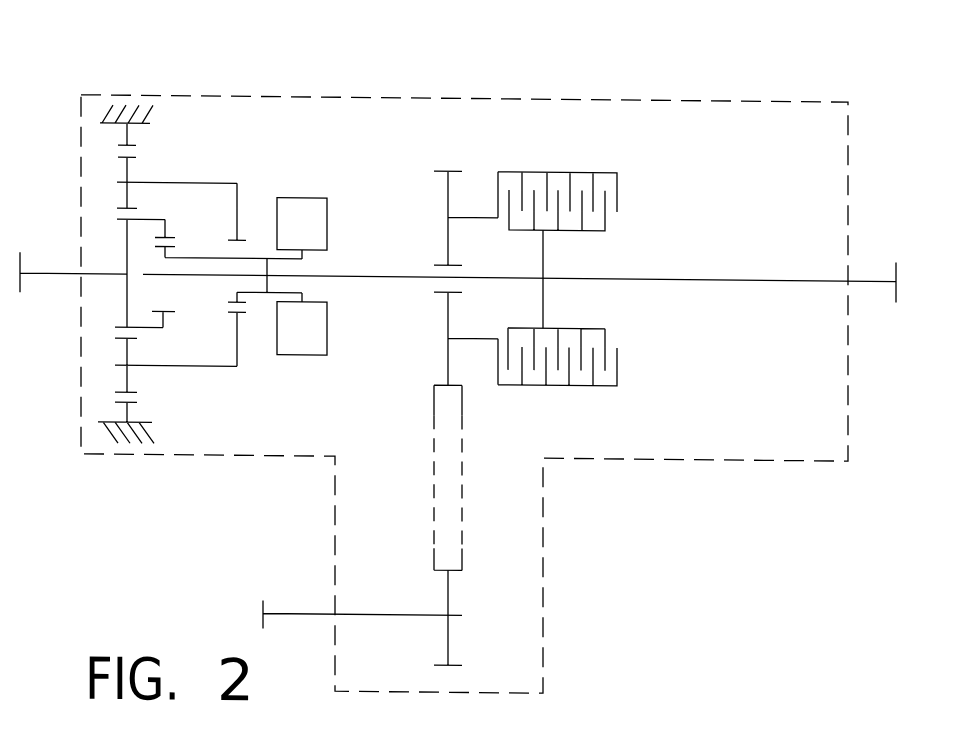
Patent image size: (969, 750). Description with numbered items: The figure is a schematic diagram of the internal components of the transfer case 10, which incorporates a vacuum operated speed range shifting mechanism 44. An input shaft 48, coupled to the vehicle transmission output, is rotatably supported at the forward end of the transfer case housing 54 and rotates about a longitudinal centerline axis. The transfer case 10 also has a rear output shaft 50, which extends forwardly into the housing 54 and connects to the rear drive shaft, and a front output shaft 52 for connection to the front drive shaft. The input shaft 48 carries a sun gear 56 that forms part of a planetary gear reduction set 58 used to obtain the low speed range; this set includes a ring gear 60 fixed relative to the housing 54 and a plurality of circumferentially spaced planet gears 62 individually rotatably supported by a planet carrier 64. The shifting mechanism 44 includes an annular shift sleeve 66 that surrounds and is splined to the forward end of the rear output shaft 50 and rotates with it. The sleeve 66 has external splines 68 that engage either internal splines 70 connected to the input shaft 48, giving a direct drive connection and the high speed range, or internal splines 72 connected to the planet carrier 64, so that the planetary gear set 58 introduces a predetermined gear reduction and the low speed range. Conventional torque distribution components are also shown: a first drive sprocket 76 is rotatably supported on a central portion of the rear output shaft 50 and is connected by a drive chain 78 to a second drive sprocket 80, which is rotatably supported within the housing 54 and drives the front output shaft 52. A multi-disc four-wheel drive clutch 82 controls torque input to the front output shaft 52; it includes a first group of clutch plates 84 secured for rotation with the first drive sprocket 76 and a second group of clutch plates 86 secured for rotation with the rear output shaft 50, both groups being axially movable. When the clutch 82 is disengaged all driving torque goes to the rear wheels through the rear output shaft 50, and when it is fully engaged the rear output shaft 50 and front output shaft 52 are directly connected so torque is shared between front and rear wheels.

The transfer case 10 is at (677, 67).
The vacuum operated speed range shifting mechanism 44 is at (321, 253).
The input shaft 48 is at (28, 276).
The rear output shaft 50 is at (856, 272).
The front output shaft 52 is at (300, 612).
The transfer case housing 54 is at (510, 93).
The sun gear 56 is at (125, 218).
The planetary gear reduction set 58 is at (94, 176).
The ring gear 60 is at (125, 136).
The planet gears 62 is at (125, 167).
The planet carrier 64 is at (177, 365).
The shift sleeve 66 is at (255, 255).
The external splines 68 is at (170, 248).
The internal splines 70 is at (170, 305).
The internal splines 72 is at (226, 310).
The first drive sprocket 76 is at (446, 193).
The drive chain 78 is at (433, 428).
The second drive sprocket 80 is at (447, 643).
The multi-disc four-wheel drive clutch 82 is at (588, 291).
The first group of clutch plates 84 is at (568, 176).
The second group of clutch plates 86 is at (533, 332).